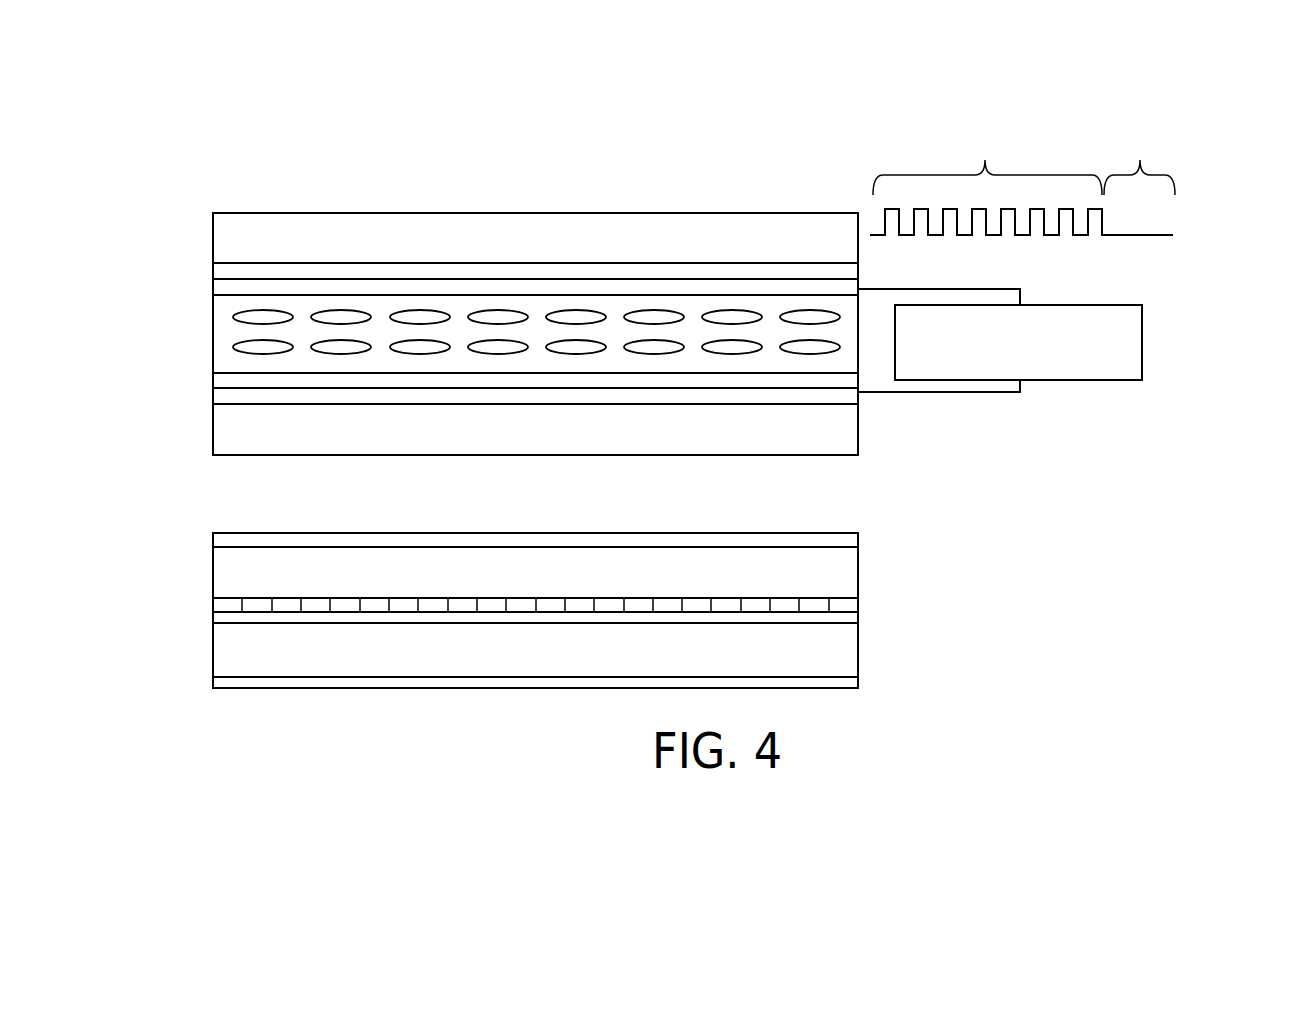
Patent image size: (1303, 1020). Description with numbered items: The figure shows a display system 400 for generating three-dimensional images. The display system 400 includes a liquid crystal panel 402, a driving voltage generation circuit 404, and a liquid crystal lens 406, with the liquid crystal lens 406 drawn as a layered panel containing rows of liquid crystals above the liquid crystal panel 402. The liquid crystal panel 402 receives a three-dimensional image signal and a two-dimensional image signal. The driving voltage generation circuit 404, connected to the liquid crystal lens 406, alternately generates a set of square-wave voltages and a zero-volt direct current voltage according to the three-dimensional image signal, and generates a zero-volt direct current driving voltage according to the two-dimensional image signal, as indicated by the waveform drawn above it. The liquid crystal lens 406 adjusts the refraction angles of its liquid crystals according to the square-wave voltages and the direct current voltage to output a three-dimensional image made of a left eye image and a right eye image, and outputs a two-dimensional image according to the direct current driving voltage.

The display system 400 is at (388, 95).
The liquid crystal panel 402 is at (250, 533).
The driving voltage generation circuit 404 is at (1103, 305).
The liquid crystal lens 406 is at (250, 213).